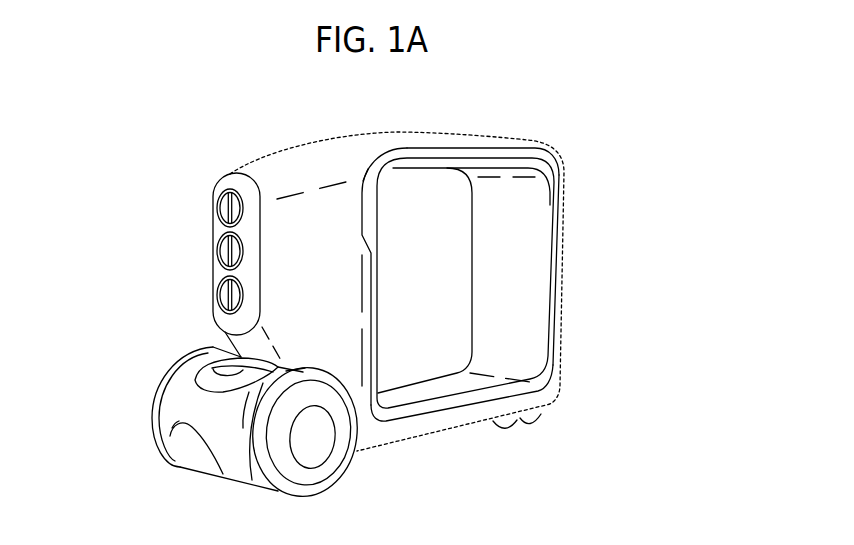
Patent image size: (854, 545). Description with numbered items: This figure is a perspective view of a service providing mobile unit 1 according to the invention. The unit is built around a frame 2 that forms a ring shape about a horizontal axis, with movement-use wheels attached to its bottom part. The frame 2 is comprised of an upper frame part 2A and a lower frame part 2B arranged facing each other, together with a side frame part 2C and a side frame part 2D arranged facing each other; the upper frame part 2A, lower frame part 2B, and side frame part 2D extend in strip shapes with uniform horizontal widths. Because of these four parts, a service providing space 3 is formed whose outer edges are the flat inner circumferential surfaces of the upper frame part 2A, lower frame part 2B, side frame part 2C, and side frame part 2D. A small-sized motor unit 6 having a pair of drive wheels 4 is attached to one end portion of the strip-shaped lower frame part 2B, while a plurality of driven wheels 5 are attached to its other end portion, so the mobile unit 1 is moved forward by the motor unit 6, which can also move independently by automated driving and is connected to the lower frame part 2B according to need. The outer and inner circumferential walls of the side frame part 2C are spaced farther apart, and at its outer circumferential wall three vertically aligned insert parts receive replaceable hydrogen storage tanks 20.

The service providing mobile unit 1 is at (568, 113).
The frame 2 is at (473, 129).
The upper frame part 2A is at (433, 141).
The lower frame part 2B is at (457, 428).
The side frame part 2C is at (342, 216).
The side frame part 2D is at (530, 277).
The service providing space 3 is at (428, 207).
The drive wheels 4 is at (155, 408).
The driven wheels 5 is at (508, 430).
The small-sized motor unit 6 is at (210, 432).
The hydrogen storage tanks 20 is at (218, 296).